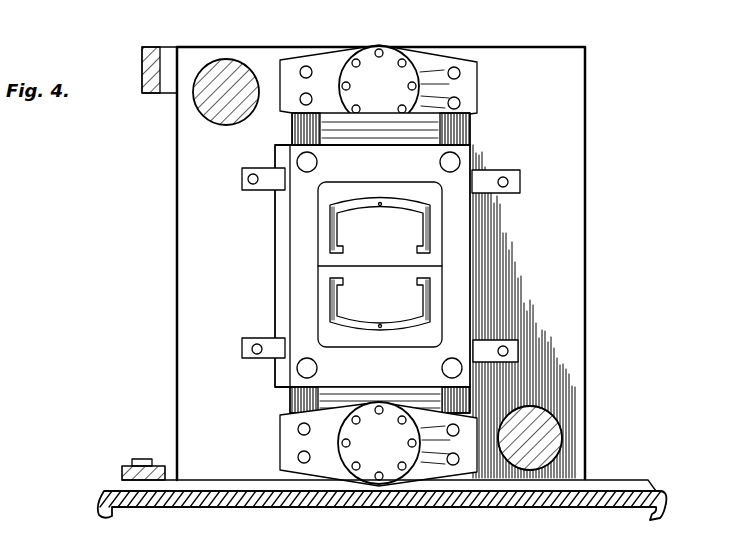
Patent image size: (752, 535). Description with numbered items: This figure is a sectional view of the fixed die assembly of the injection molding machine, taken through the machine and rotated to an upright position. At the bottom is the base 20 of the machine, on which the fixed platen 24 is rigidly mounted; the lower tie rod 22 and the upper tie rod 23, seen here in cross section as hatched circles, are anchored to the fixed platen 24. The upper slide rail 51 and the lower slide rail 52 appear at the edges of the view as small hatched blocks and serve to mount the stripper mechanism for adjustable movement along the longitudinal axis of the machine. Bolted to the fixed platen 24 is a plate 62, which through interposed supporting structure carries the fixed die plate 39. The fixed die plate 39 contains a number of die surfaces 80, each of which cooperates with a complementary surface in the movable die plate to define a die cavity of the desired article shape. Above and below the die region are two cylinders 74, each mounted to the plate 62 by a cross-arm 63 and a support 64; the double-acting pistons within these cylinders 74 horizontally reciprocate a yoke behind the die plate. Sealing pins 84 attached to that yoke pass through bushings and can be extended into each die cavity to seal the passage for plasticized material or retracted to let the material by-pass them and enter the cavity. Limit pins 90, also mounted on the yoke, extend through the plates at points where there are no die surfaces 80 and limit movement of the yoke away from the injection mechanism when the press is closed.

The base 20 is at (106, 492).
The lower tie rod 22 is at (556, 428).
The upper tie rod 23 is at (214, 70).
The fixed platen 24 is at (586, 232).
The fixed die plate 39 is at (464, 250).
The upper slide rail 51 is at (152, 94).
The lower slide rail 52 is at (138, 456).
The plate 62 is at (276, 207).
The cross-arm 63 is at (423, 74).
The support 64 is at (472, 131).
The cylinder 74 is at (398, 68).
The die surface 80 is at (330, 212).
The sealing pin 84 is at (380, 325).
The limit pin 90 is at (516, 373).